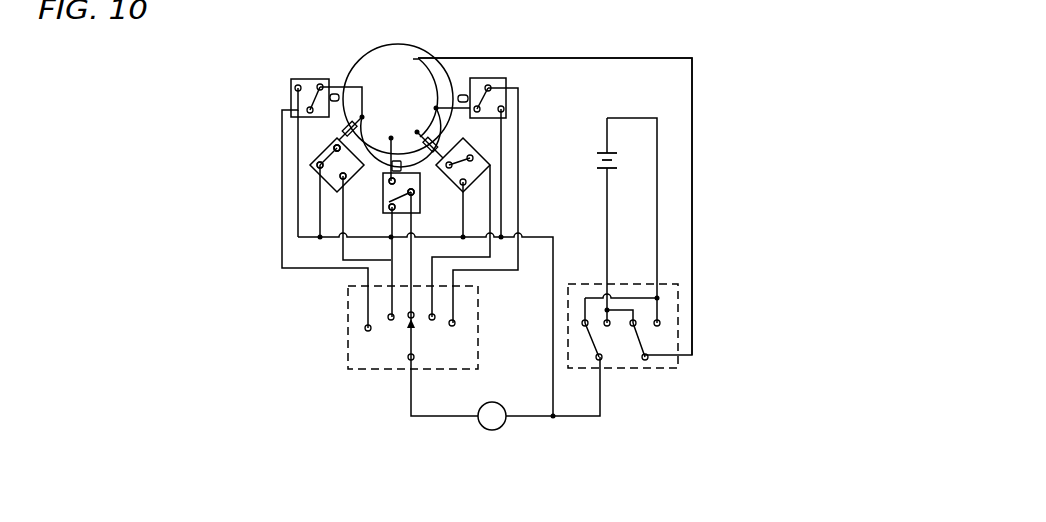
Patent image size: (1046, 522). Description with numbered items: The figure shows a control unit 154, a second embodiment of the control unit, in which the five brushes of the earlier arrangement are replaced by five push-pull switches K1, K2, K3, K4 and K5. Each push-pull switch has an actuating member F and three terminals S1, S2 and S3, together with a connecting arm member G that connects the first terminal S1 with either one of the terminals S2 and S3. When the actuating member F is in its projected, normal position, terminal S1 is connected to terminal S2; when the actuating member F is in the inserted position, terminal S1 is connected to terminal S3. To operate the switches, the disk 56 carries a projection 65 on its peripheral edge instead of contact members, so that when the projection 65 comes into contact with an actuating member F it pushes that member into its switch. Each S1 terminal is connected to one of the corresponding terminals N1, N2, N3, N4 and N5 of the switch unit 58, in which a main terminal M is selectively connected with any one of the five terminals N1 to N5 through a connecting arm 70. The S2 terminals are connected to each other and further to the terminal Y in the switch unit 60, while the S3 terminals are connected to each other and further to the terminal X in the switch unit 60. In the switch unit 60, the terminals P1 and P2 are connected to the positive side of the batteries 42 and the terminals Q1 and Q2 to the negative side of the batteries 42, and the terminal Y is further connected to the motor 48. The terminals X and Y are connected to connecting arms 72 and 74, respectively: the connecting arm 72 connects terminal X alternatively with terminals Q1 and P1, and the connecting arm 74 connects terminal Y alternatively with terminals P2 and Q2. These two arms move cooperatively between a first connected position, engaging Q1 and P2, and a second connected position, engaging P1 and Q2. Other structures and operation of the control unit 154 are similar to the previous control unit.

The disk 56 is at (363, 70).
The projection 65 is at (399, 158).
The actuating member F is at (330, 95).
The push-pull switch K1 is at (292, 78).
The push-pull switch K2 is at (312, 150).
The push-pull switch K3 is at (388, 234).
The push-pull switch K4 is at (490, 152).
The push-pull switch K5 is at (484, 78).
The first terminal S1 is at (374, 143).
The second terminal S2 is at (338, 147).
The third terminal S3 is at (318, 166).
The connecting arm member G is at (337, 150).
The control unit 154 is at (616, 44).
The batteries 42 is at (603, 156).
The switch unit 58 is at (348, 369).
The terminal N1 is at (366, 329).
The terminal N2 is at (390, 320).
The terminal N3 is at (413, 318).
The terminal N4 is at (434, 320).
The terminal N5 is at (455, 325).
The connecting arm 70 is at (410, 326).
The main terminal M is at (413, 360).
The motor 48 is at (492, 431).
The switch unit 60 is at (682, 364).
The terminal Q1 is at (583, 321).
The terminal Q2 is at (658, 320).
The terminal P1 is at (606, 320).
The terminal P2 is at (634, 320).
The connecting arm 72 is at (586, 333).
The connecting arm 74 is at (635, 335).
The terminal X is at (598, 359).
The terminal Y is at (647, 359).